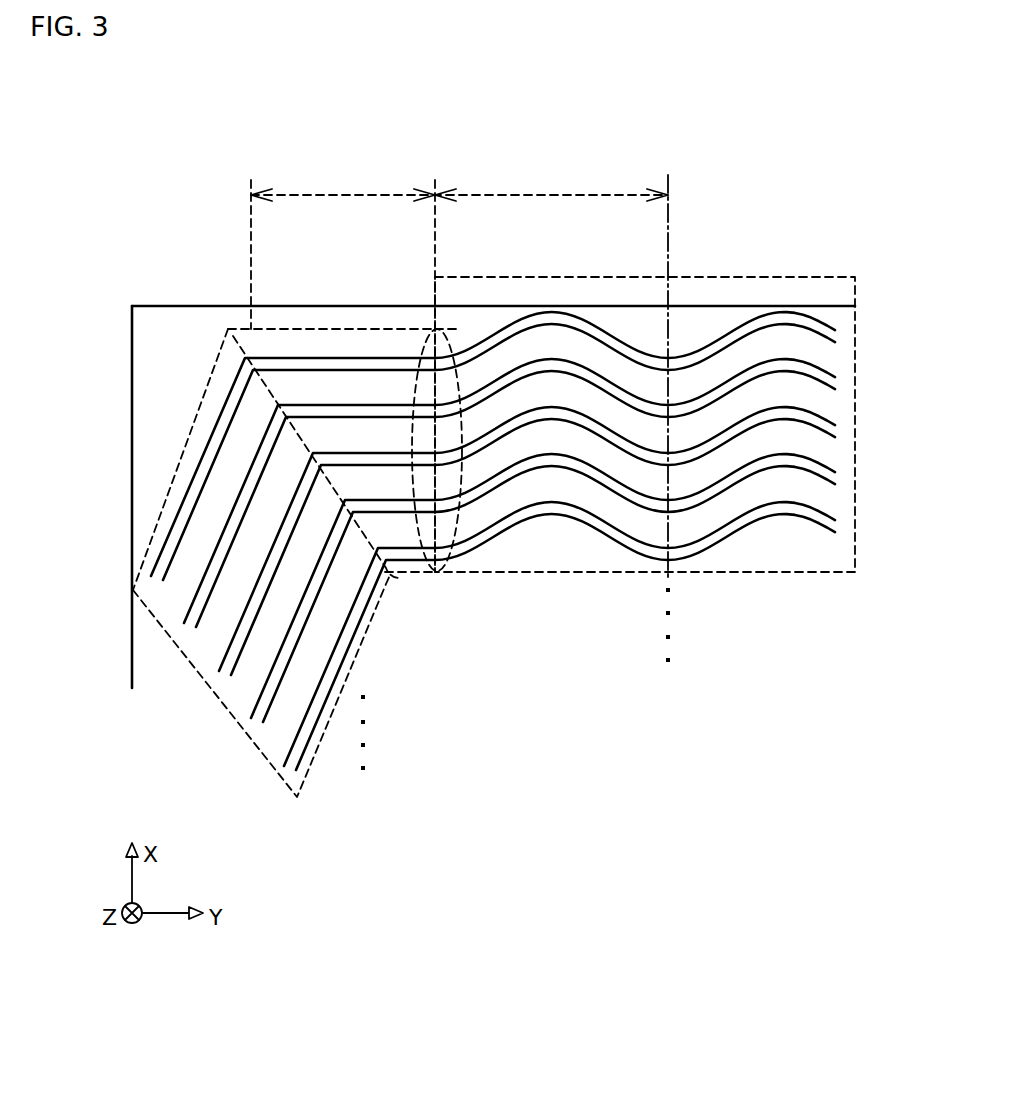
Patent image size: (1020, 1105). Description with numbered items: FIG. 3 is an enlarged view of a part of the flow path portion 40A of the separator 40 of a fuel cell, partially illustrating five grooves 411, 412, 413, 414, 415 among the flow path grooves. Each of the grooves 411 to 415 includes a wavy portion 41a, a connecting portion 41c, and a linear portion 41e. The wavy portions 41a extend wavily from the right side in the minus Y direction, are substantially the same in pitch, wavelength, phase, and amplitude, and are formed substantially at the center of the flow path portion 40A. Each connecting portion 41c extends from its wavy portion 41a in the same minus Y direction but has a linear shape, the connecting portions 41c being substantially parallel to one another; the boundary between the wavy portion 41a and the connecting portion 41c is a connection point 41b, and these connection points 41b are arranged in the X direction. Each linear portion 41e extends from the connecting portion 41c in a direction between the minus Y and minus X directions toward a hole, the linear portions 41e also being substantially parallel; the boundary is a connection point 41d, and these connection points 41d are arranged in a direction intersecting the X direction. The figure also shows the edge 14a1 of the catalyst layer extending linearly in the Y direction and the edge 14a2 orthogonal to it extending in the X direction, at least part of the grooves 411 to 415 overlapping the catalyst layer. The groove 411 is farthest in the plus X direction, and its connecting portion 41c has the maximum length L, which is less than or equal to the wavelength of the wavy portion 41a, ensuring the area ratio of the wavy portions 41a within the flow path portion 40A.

The separator 40 is at (846, 157).
The flow path portion 40A is at (867, 212).
The edge of the catalyst layer 14a1 is at (830, 305).
The edge of the catalyst layer 14a2 is at (132, 665).
The groove 411 is at (846, 322).
The groove 412 is at (846, 370).
The groove 413 is at (846, 419).
The groove 414 is at (846, 467).
The groove 415 is at (846, 514).
The wavy portion 41a is at (565, 277).
The connection point 41b is at (425, 328).
The connecting portion 41c is at (304, 328).
The connection point 41d is at (237, 400).
The linear portion 41e is at (170, 503).